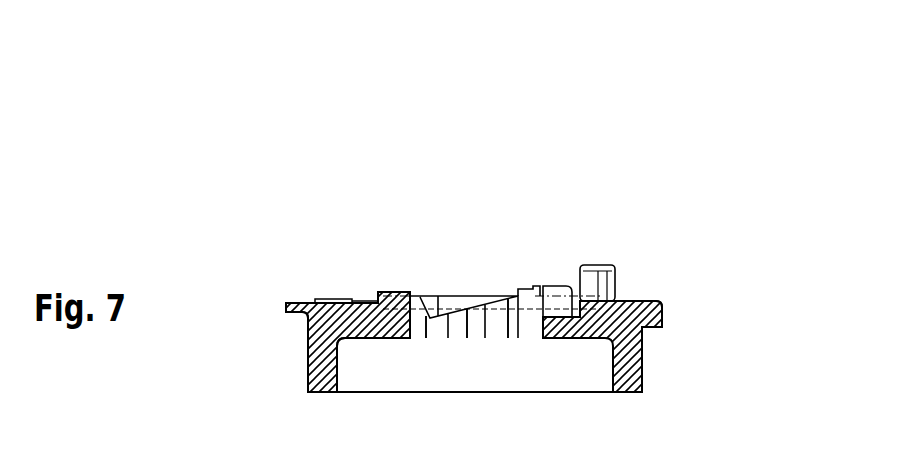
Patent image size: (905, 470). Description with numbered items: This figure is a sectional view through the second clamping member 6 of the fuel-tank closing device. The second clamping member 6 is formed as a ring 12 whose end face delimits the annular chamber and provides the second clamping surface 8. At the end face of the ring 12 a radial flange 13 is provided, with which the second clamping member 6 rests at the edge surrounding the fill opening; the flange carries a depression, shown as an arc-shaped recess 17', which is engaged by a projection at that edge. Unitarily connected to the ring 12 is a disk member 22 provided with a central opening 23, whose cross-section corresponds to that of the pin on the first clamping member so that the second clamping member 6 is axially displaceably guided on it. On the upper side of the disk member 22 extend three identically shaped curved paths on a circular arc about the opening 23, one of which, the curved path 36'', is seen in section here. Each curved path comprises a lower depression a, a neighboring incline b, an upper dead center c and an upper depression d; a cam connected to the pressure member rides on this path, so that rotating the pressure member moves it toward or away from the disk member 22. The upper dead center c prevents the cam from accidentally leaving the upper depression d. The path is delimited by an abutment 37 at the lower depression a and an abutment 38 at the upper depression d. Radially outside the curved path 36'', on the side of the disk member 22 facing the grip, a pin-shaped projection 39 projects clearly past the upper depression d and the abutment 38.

The second clamping member 6 is at (346, 280).
The second clamping surface 8 is at (630, 394).
The ring 12 is at (643, 359).
The radial flange 13 is at (664, 317).
The arc-shaped recess 17' is at (259, 340).
The disk member 22 is at (374, 320).
The central opening 23 is at (407, 323).
The curved path 36'' is at (491, 256).
The abutment 37 is at (404, 296).
The abutment 38 is at (536, 291).
The projection 39 is at (600, 266).
The lower depression a is at (430, 304).
The incline b is at (468, 306).
The upper dead center c is at (515, 300).
The upper depression d is at (522, 300).